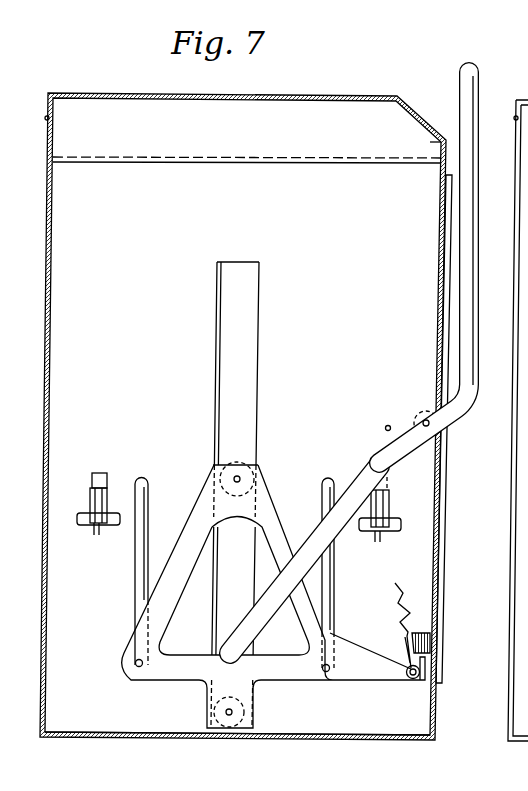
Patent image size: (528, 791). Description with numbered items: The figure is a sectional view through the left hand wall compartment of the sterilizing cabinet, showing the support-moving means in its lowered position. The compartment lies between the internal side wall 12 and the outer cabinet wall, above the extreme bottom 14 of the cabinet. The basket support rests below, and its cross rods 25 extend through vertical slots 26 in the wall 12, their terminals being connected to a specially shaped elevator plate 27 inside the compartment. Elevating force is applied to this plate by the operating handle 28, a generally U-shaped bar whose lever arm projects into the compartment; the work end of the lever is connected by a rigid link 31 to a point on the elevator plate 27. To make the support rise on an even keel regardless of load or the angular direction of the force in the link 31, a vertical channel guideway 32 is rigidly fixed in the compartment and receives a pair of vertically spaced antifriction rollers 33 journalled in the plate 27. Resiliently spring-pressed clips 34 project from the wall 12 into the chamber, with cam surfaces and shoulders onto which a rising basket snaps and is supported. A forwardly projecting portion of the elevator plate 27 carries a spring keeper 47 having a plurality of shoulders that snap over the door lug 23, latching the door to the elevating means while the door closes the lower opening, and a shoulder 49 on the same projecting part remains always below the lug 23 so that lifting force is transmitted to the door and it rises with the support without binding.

The internal side wall 12 is at (58, 421).
The extreme bottom 14 is at (162, 733).
The door lug 23 is at (430, 648).
The cross rods 25 is at (137, 667).
The vertical slots 26 is at (136, 561).
The elevator plate 27 is at (264, 507).
The operating handle 28 is at (481, 76).
The rigid link 31 is at (357, 478).
The vertical channel guideway 32 is at (224, 399).
The antifriction rollers 33 is at (246, 470).
The clips 34 is at (101, 486).
The spring keeper 47 is at (396, 588).
The shoulder 49 is at (410, 684).